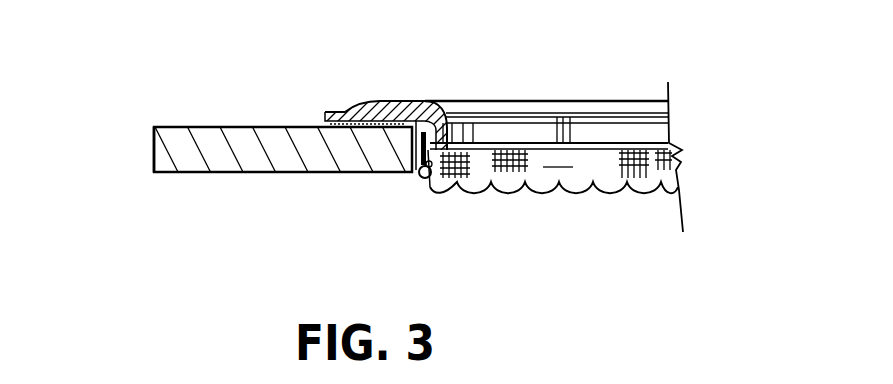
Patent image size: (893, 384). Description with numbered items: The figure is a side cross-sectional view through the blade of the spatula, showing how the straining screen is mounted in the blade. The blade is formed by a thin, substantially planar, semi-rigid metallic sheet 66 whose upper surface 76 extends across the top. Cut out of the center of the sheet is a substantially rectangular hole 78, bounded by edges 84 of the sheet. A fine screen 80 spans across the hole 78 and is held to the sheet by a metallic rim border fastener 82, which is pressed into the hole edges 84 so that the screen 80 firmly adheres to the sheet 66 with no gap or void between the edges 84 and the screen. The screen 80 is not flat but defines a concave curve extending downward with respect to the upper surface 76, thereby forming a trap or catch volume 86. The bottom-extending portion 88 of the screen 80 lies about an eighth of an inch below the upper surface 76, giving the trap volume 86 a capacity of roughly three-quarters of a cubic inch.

The sheet 66 is at (153, 150).
The upper surface 76 is at (290, 127).
The hole 78 is at (565, 64).
The screen 80 is at (550, 187).
The border fastener 82 is at (398, 102).
The edges 84 is at (421, 178).
The trap volume 86 is at (590, 163).
The bottom-extending portion 88 is at (510, 190).